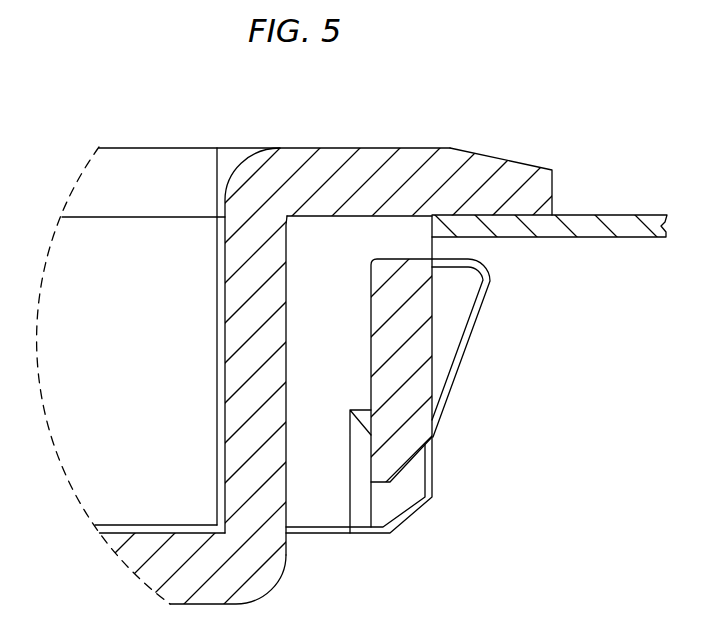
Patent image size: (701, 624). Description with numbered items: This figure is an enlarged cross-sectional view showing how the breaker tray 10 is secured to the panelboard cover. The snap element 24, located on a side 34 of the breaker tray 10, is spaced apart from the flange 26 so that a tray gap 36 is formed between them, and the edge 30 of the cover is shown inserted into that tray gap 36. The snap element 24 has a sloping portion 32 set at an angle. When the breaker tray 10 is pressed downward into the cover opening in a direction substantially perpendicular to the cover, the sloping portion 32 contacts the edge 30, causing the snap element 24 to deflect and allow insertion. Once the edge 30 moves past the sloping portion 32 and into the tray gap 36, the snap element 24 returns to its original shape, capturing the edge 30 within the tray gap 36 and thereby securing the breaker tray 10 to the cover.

The breaker tray 10 is at (242, 172).
The snap element 24 is at (545, 345).
The flange 26 is at (341, 148).
The edge 30 is at (490, 247).
The sloping portion 32 is at (460, 362).
The side 34 is at (317, 542).
The tray gap 36 is at (553, 188).